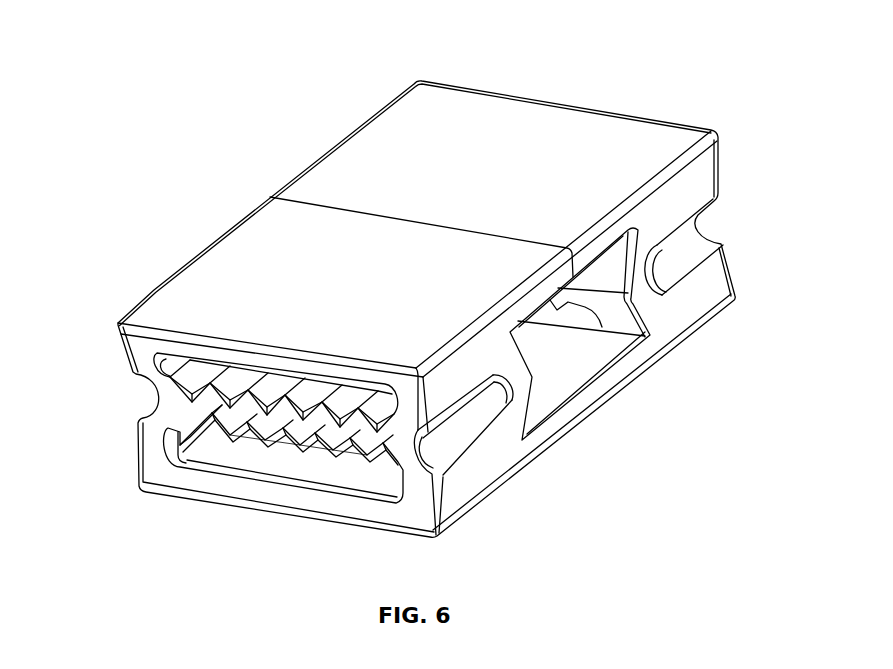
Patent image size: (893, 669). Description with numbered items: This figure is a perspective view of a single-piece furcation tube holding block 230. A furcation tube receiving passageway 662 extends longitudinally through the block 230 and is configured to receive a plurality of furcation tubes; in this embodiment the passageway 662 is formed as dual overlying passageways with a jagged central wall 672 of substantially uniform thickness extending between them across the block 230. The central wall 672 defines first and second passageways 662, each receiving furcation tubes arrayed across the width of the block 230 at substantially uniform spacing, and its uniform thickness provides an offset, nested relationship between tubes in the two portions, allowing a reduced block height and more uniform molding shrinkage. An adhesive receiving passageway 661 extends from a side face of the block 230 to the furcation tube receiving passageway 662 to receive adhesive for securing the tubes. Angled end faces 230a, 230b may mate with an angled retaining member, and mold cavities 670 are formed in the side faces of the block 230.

The furcation tube holding block 230 is at (349, 40).
The angled end faces 230a is at (541, 99).
The second clamp half 230b is at (118, 350).
The adhesive receiving passageway 661 is at (570, 371).
The furcation tube receiving passageway 662 is at (236, 378).
The mold cavities 670 is at (697, 245).
The central wall 672 is at (300, 427).